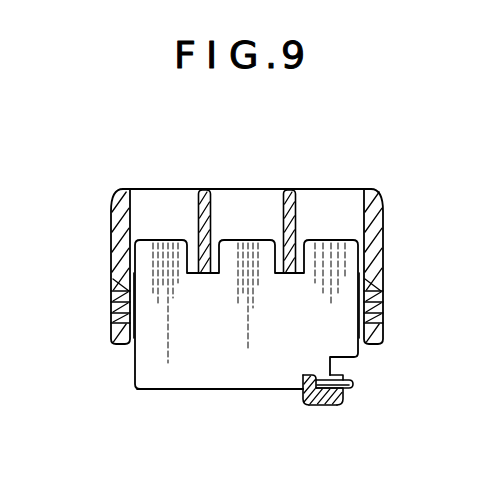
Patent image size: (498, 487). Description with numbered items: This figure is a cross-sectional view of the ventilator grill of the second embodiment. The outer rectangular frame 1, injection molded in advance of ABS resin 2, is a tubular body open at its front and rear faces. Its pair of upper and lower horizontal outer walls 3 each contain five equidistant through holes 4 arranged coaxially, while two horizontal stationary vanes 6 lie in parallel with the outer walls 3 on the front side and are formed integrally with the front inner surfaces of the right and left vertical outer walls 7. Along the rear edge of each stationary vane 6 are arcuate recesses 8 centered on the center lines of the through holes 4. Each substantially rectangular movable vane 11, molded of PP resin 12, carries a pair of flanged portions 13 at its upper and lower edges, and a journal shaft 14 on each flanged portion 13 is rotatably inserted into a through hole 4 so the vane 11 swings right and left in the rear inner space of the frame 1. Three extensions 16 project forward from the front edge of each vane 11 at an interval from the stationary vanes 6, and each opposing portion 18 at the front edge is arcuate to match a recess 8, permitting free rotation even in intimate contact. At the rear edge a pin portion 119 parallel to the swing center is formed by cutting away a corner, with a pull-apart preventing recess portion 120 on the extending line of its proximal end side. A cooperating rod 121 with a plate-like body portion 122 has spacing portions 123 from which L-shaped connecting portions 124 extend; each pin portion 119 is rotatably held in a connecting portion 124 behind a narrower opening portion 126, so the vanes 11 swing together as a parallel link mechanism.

The outer rectangular frame 1 is at (243, 237).
The ABS resin 2 is at (243, 237).
The horizontal outer wall 3 is at (108, 214).
The through hole 4 is at (108, 280).
The stationary vane 6 is at (242, 226).
The vertical outer wall 7 is at (327, 188).
The arcuate recess 8 is at (196, 243).
The movable vane 11 is at (275, 327).
The PP resin 12 is at (275, 327).
The flanged portion 13 is at (131, 303).
The journal shaft 14 is at (108, 304).
The extension 16 is at (146, 237).
The opposing portion 18 is at (202, 271).
The pin portion 119 is at (351, 382).
The recess portion 120 is at (300, 371).
The cooperating rod 121 is at (304, 404).
The plate-like body portion 122 is at (298, 394).
The spacing portion 123 is at (335, 403).
The connecting portion 124 is at (342, 396).
The opening portion 126 is at (342, 370).